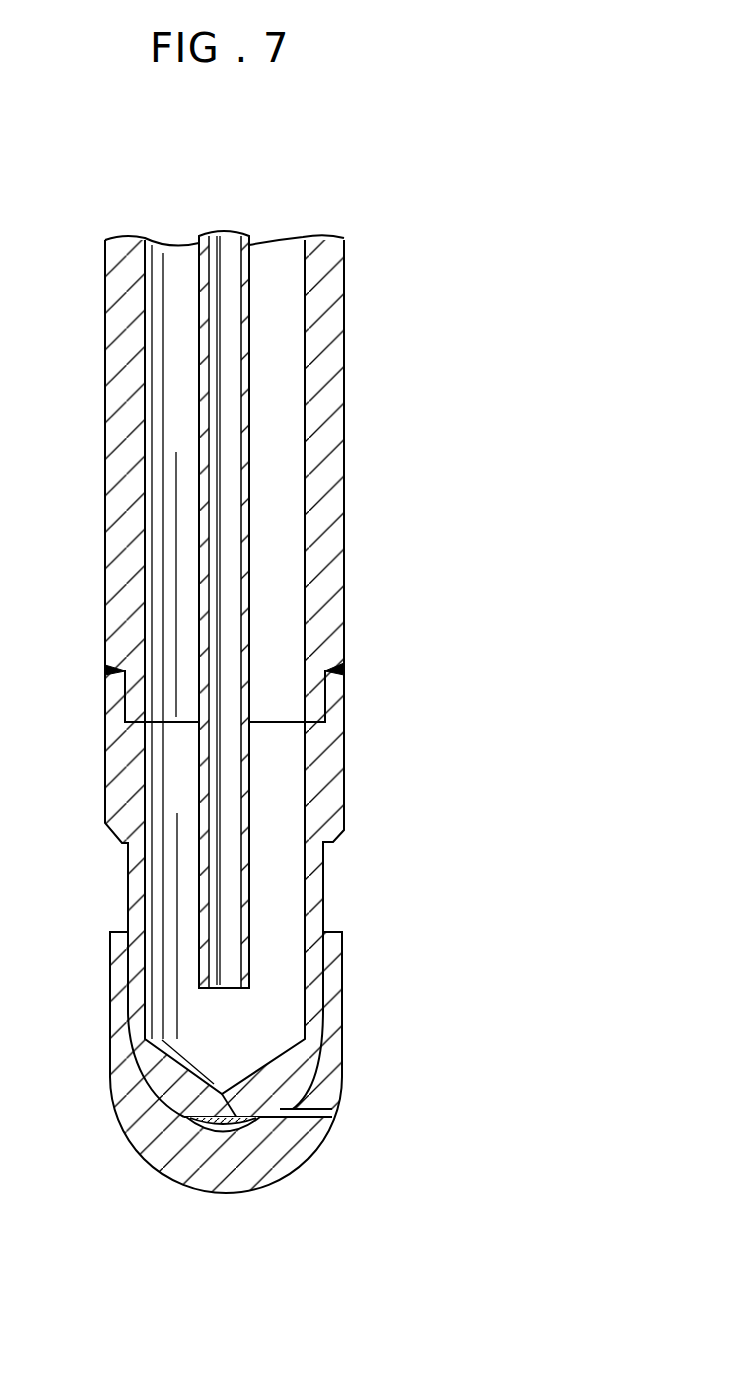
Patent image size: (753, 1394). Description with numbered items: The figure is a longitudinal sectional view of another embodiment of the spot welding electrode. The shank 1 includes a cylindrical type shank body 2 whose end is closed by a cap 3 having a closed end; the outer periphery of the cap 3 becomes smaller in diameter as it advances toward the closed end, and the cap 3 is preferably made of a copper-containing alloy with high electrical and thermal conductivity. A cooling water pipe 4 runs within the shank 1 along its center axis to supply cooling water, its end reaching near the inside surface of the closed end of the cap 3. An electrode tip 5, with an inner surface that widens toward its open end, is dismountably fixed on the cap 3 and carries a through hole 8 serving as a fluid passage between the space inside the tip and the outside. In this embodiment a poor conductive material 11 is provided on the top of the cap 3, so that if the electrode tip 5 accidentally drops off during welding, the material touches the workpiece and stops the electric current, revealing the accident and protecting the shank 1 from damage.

The shank 1 is at (346, 354).
The shank body 2 is at (345, 471).
The cap 3 is at (347, 790).
The cooling water pipe 4 is at (250, 272).
The electrode tip 5 is at (260, 1170).
The through hole 8 is at (333, 1112).
The poor conductive material 11 is at (217, 1133).